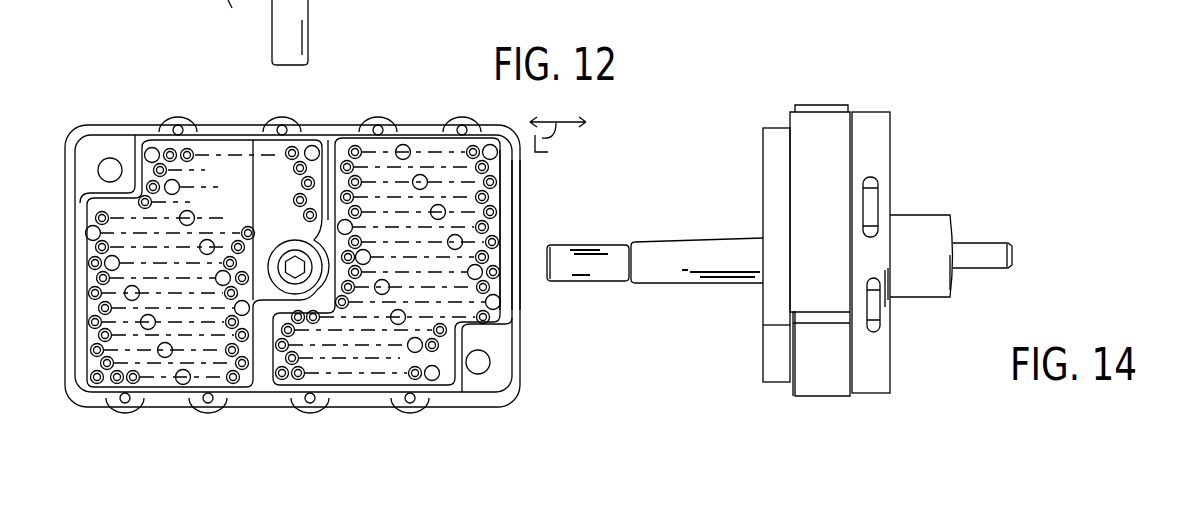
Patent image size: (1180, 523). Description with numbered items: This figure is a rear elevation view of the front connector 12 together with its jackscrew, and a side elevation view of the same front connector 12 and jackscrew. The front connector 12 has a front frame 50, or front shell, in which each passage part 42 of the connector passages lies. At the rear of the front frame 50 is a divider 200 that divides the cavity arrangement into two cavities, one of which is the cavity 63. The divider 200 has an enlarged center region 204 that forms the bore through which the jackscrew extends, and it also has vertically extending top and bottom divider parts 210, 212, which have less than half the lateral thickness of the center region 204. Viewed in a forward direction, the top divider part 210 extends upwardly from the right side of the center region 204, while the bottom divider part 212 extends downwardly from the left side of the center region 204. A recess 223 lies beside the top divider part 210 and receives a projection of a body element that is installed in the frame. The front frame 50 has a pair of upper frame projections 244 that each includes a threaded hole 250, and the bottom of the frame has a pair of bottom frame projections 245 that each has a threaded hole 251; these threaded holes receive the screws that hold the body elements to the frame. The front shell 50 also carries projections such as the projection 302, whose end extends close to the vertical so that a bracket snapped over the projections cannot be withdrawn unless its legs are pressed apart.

In FIG. 12, the front connector 12 is at (357, 80).
In FIG. 12, the frame 50 is at (96, 123).
In FIG. 12, the upper frame projection 244 is at (162, 124).
In FIG. 12, the threaded hole 250 is at (181, 123).
In FIG. 12, the enlarged center region 204 is at (275, 240).
In FIG. 12, the divider 200 is at (303, 143).
In FIG. 12, the recess 223 is at (326, 158).
In FIG. 12, the top divider part 210 is at (326, 150).
In FIG. 12, the passage part 42 is at (486, 184).
In FIG. 12, the cavity 63 is at (492, 228).
In FIG. 12, the bottom frame projection 245 is at (143, 410).
In FIG. 12, the threaded hole 251 is at (216, 409).
In FIG. 12, the bottom divider part 212 is at (286, 408).
In FIG. 14, the projection 302 is at (873, 203).